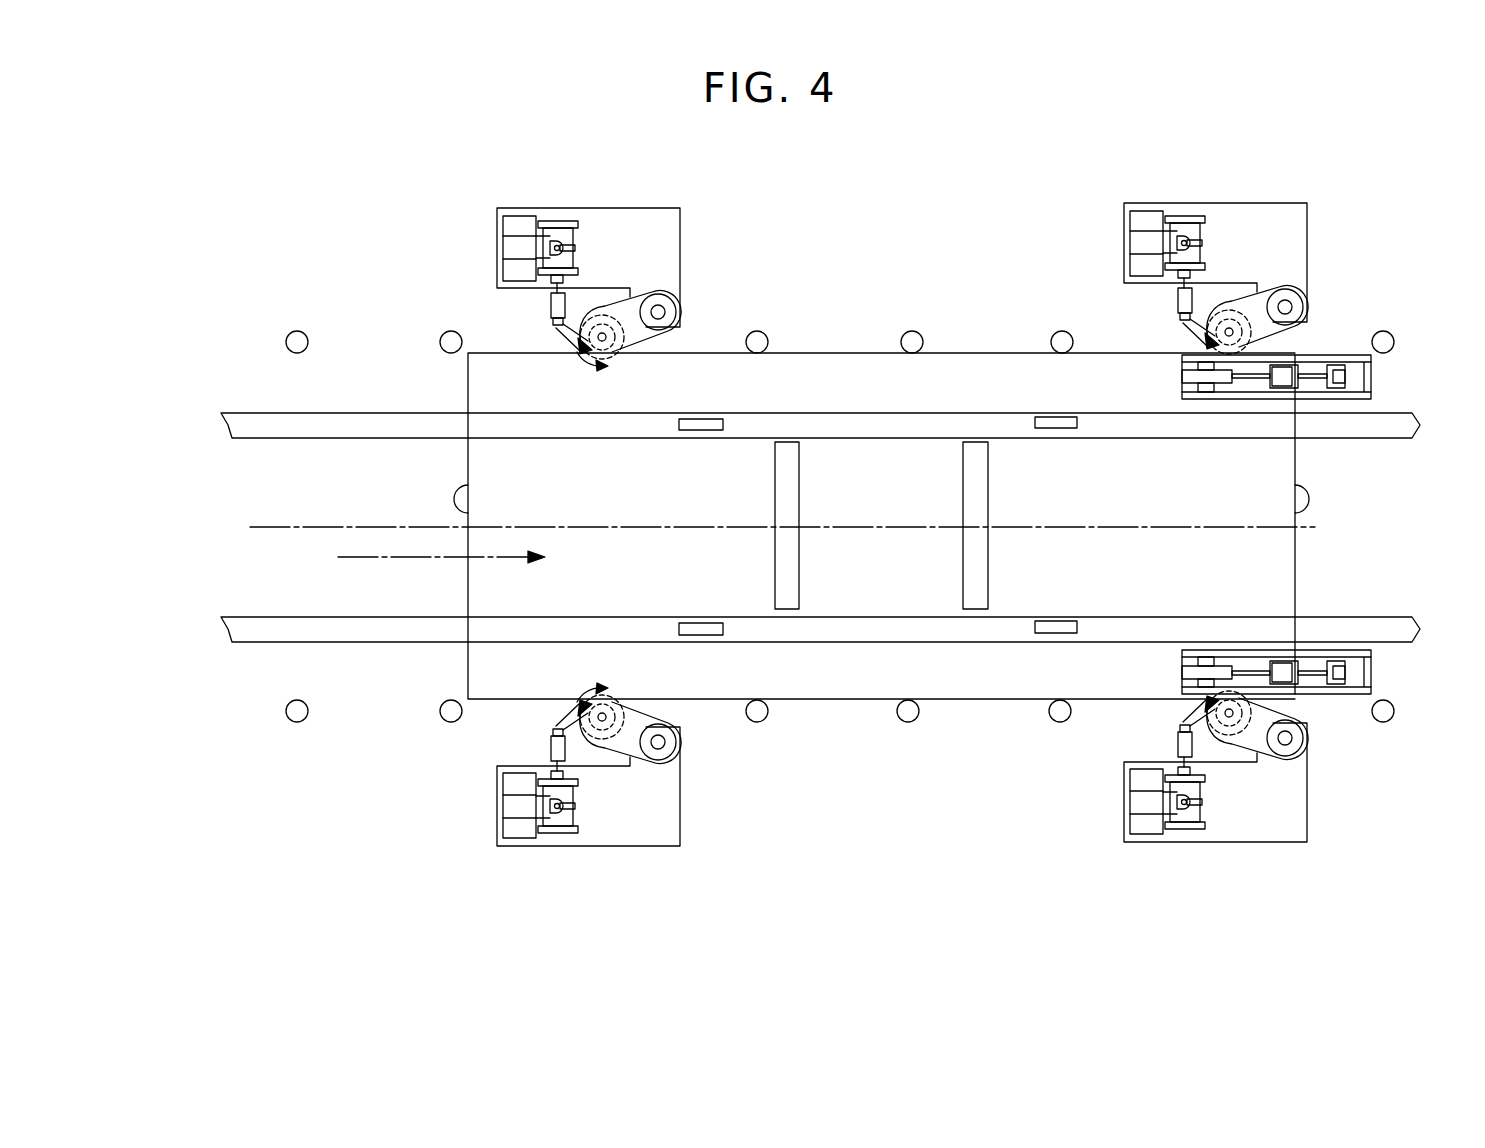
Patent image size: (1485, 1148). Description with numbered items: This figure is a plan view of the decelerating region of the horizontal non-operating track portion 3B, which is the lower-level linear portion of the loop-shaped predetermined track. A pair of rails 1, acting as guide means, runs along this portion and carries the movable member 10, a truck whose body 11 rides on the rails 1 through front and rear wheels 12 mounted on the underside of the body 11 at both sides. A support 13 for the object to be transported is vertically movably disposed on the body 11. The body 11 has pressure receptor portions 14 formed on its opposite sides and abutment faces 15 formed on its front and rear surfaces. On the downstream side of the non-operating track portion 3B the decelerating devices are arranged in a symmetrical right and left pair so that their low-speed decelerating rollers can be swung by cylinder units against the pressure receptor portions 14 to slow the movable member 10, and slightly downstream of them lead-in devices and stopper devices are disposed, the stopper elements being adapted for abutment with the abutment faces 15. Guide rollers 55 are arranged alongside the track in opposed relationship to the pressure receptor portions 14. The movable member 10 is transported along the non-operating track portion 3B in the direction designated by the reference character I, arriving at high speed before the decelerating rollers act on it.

The rails 1 is at (250, 617).
The non-operating track portion 3B is at (425, 527).
The movable member 10 is at (862, 685).
The body 11 is at (796, 385).
The wheels 12 is at (1043, 430).
The support 13 is at (797, 500).
The pressure receptor portion 14 is at (832, 352).
The abutment faces 15 is at (468, 485).
The guide rollers 55 is at (1060, 338).
The transport direction of movable member I is at (382, 560).